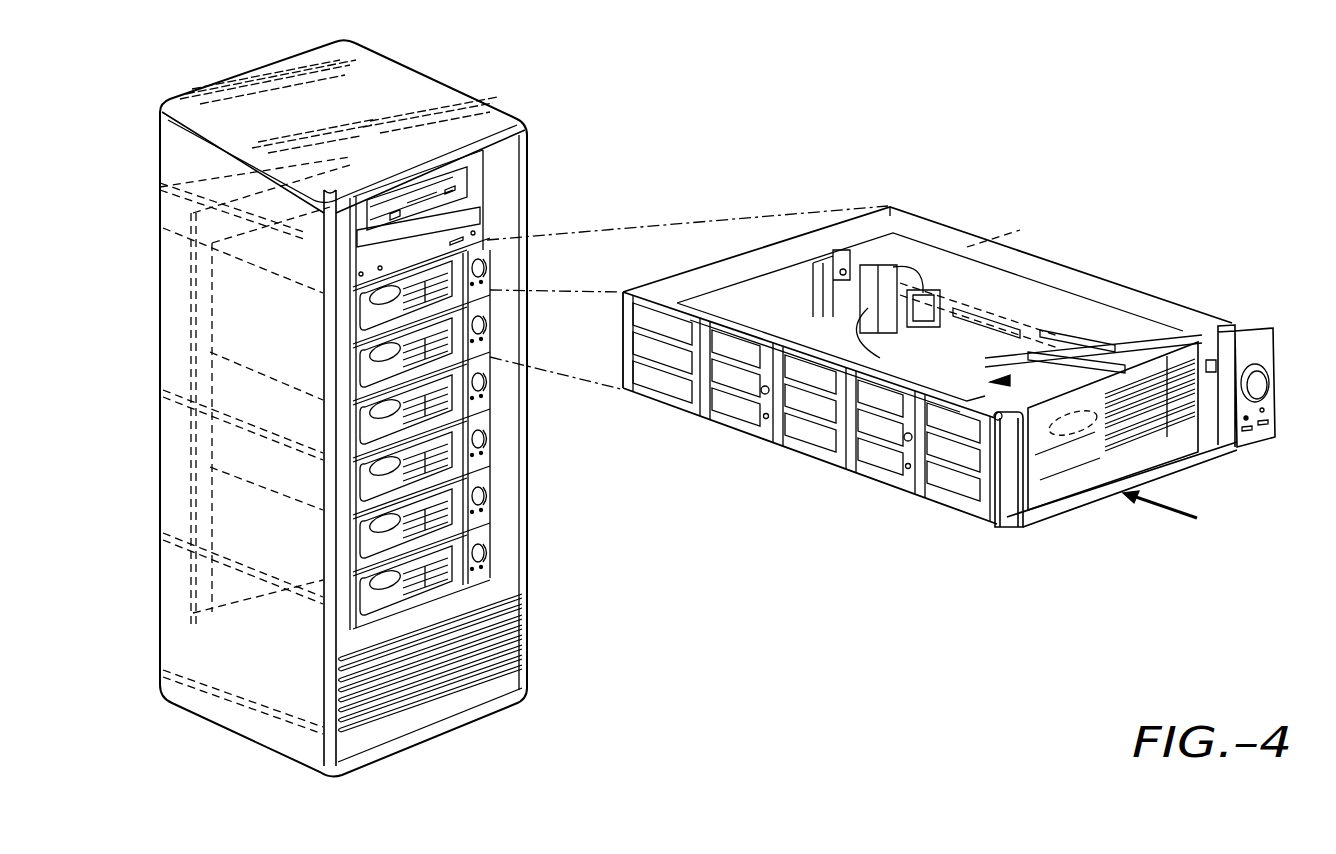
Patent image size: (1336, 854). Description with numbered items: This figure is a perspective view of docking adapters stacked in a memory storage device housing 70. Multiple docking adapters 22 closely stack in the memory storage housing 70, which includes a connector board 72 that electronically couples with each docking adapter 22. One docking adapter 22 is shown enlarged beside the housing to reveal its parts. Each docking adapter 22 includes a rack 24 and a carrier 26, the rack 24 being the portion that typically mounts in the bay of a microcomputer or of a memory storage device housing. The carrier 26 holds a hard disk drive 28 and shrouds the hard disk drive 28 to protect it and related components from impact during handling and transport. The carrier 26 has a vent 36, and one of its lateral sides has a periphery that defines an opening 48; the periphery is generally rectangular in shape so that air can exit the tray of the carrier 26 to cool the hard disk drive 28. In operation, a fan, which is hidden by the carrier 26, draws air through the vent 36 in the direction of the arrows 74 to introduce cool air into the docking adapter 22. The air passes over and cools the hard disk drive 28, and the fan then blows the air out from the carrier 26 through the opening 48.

The docking adapter 22 is at (490, 540).
The rack 24 is at (890, 215).
The carrier 26 is at (1133, 337).
The hard disk drive 28 is at (970, 295).
The vent 36 is at (1210, 438).
The opening 48 is at (930, 298).
The memory storage device housing 70 is at (466, 63).
The connector board 72 is at (190, 262).
The arrows 74 is at (1173, 512).